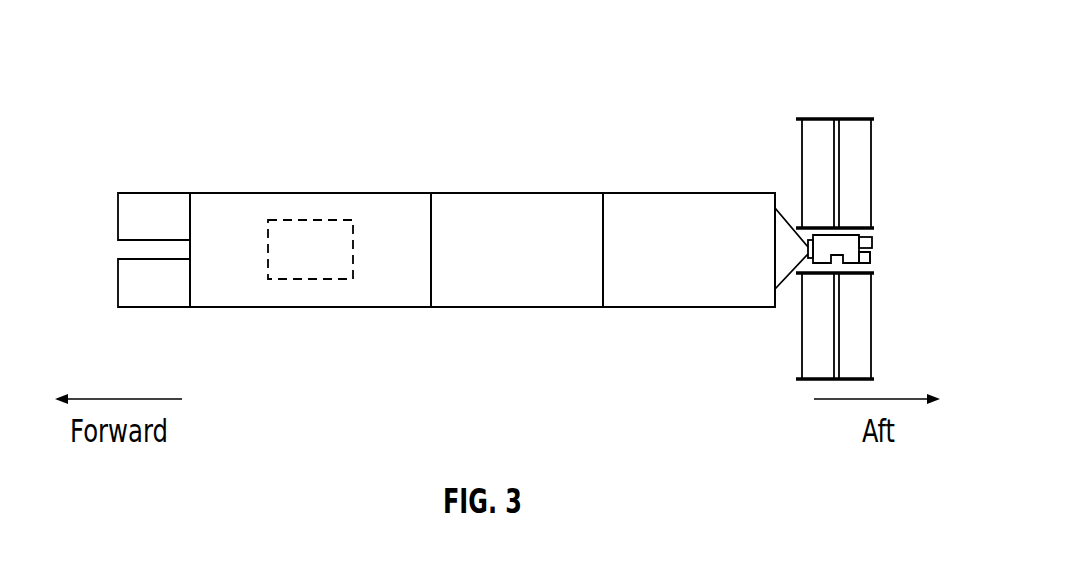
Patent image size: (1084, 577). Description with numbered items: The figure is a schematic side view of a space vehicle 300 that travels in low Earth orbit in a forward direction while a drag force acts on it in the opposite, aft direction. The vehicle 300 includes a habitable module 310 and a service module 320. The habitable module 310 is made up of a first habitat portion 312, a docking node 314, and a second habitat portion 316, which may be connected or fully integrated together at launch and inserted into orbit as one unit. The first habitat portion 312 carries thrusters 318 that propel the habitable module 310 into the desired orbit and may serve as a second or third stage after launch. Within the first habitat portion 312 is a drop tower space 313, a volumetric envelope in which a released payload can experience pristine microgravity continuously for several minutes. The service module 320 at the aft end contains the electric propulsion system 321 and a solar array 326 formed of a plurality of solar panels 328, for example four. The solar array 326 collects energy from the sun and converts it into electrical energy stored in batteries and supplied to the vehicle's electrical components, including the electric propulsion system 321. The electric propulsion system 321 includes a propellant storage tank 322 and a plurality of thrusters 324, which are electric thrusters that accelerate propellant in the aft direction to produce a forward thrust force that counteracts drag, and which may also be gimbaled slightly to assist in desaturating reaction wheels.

The space vehicle 300 is at (163, 58).
The habitable module 310 is at (776, 182).
The first habitat portion 312 is at (225, 295).
The drop tower space 313 is at (310, 269).
The docking node 314 is at (542, 288).
The second habitat portion 316 is at (662, 288).
The thrusters 318 is at (125, 270).
The service module 320 is at (843, 100).
The electric propulsion system 321 is at (884, 259).
The propellant storage tank 322 is at (848, 253).
The thrusters 324 is at (871, 240).
The solar array 326 is at (860, 146).
The solar panels 328 is at (808, 138).